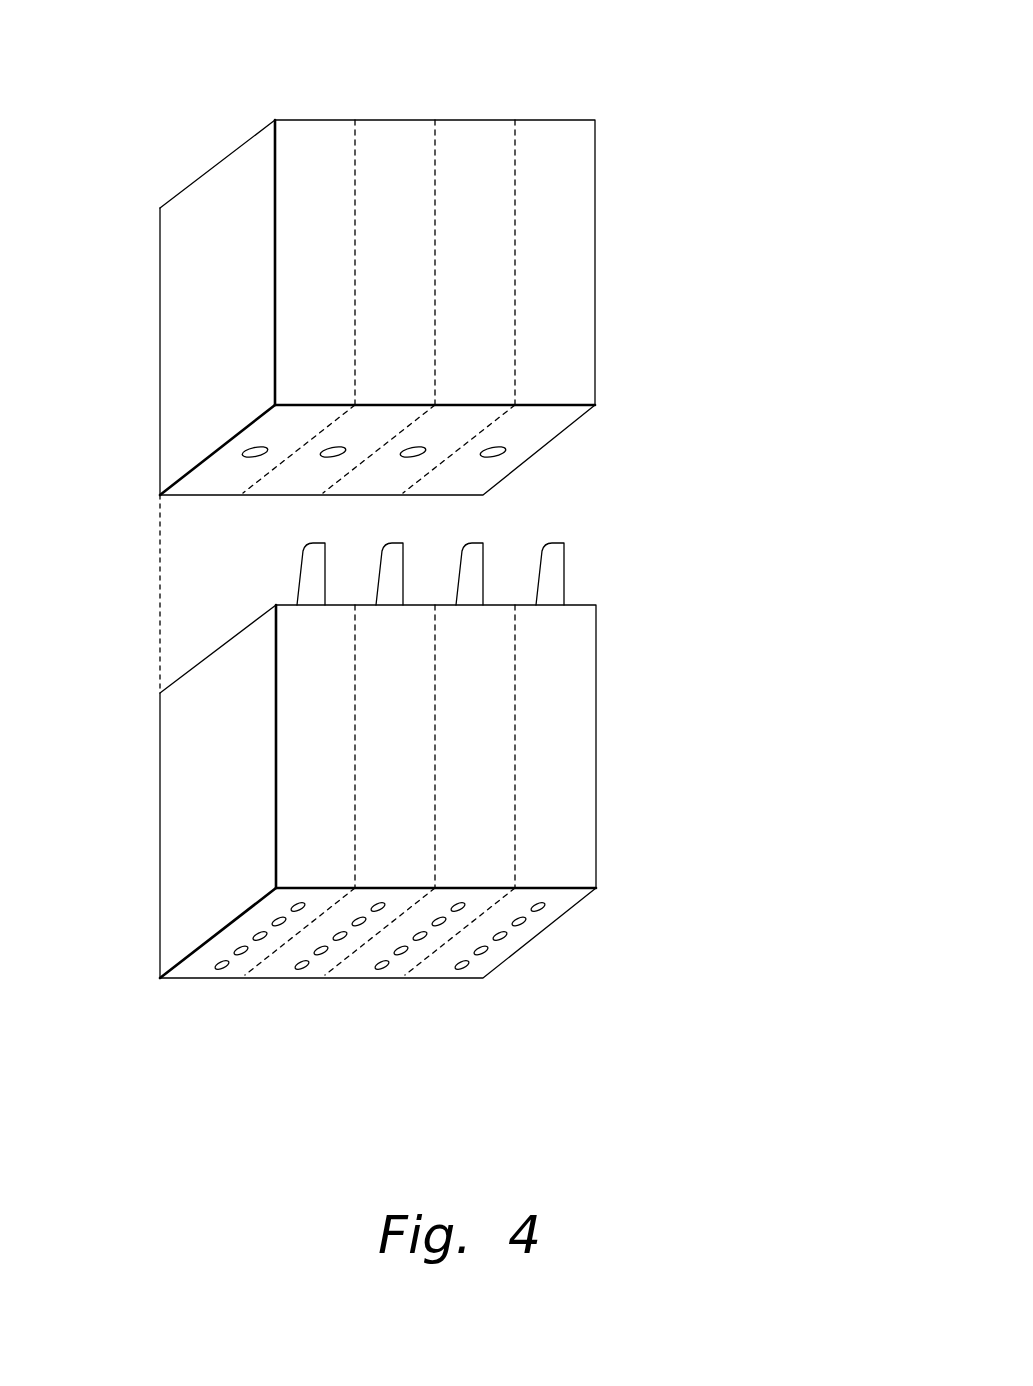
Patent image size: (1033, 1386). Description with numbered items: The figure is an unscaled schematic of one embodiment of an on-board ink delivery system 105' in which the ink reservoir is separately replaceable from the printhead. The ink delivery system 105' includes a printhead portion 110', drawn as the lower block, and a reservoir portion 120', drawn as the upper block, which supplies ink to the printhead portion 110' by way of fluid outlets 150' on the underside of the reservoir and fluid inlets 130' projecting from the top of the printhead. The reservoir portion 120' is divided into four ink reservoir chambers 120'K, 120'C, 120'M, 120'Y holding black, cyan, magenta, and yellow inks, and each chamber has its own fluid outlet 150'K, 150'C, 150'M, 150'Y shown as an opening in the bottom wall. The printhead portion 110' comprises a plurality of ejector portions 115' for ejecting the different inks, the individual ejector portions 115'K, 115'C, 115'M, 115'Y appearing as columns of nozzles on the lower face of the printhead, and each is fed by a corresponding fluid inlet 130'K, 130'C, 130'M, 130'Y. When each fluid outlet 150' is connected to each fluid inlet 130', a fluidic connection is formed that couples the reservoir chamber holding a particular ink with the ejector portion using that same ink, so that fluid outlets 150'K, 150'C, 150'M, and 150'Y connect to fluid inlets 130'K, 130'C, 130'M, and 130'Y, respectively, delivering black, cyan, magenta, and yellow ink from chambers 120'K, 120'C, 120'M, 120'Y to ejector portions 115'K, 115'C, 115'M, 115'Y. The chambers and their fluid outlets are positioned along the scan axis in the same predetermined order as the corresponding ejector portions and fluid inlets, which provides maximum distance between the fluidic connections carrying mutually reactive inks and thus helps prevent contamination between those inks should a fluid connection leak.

The ink delivery system 105' is at (476, 798).
The printhead portion 110' is at (443, 791).
The ejector portions 115' is at (377, 1029).
The ejector portion 115'K is at (194, 977).
The ejector portion 115'C is at (286, 986).
The ejector portion 115'M is at (377, 978).
The ejector portion 115'Y is at (463, 986).
The reservoir portion 120' is at (443, 251).
The ink reservoir chamber 120'K is at (313, 206).
The ink reservoir chamber 120'C is at (397, 220).
The ink reservoir chamber 120'M is at (489, 208).
The ink reservoir chamber 120'Y is at (566, 144).
The fluid inlets 130' is at (384, 525).
The fluid inlet 130'K is at (186, 584).
The fluid inlet 130'C is at (225, 565).
The fluid inlet 130'M is at (585, 545).
The fluid inlet 130'Y is at (622, 564).
The fluid outlets 150' is at (383, 430).
The fluid outlet 150'K is at (163, 414).
The fluid outlet 150'C is at (202, 395).
The fluid outlet 150'M is at (554, 388).
The fluid outlet 150'Y is at (591, 409).